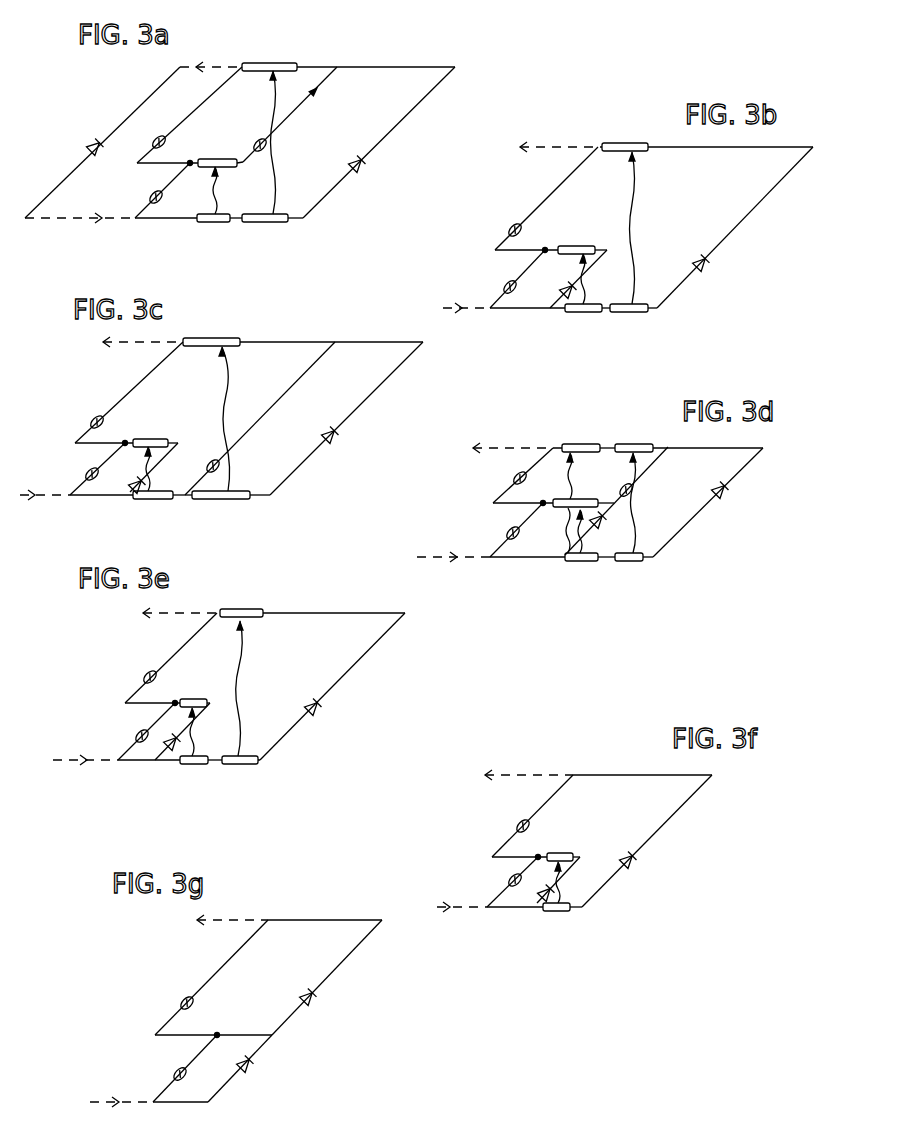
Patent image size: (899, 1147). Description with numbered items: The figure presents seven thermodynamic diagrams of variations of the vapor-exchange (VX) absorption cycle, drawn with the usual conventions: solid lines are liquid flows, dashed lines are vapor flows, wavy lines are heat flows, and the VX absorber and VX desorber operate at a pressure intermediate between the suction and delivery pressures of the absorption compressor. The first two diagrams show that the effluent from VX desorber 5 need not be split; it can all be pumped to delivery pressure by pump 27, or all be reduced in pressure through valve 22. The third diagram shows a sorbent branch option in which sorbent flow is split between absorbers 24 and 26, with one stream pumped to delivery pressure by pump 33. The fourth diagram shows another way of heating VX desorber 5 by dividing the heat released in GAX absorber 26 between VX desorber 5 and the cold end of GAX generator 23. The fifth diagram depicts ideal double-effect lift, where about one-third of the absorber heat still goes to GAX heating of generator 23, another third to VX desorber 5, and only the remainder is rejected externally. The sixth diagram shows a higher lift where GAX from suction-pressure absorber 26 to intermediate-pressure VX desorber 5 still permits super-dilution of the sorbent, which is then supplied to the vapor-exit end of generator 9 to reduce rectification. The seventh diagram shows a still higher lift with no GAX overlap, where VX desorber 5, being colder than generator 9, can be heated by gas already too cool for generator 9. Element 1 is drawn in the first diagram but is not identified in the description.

In FIG. 3a, the pump 1 is at (155, 194).
In FIG. 3a, the VX desorber 5 is at (218, 158).
In FIG. 3b, the VX desorber 5 is at (580, 246).
In FIG. 3d, the VX desorber 5 is at (590, 481).
In FIG. 3e, the VX desorber 5 is at (204, 687).
In FIG. 3f, the VX desorber 5 is at (572, 839).
In FIG. 3g, the VX desorber 5 is at (249, 1019).
In FIG. 3g, the generator 9 is at (325, 901).
In FIG. 3b, the valve 22 is at (563, 289).
In FIG. 3d, the GAX generator 23 is at (582, 443).
In FIG. 3e, the GAX generator 23 is at (250, 608).
In FIG. 3c, the absorber 24 is at (218, 500).
In FIG. 3c, the GAX absorber 26 is at (152, 500).
In FIG. 3d, the GAX absorber 26 is at (586, 562).
In FIG. 3f, the GAX absorber 26 is at (551, 912).
In FIG. 3a, the pump 27 is at (258, 138).
In FIG. 3c, the pump 33 is at (210, 457).